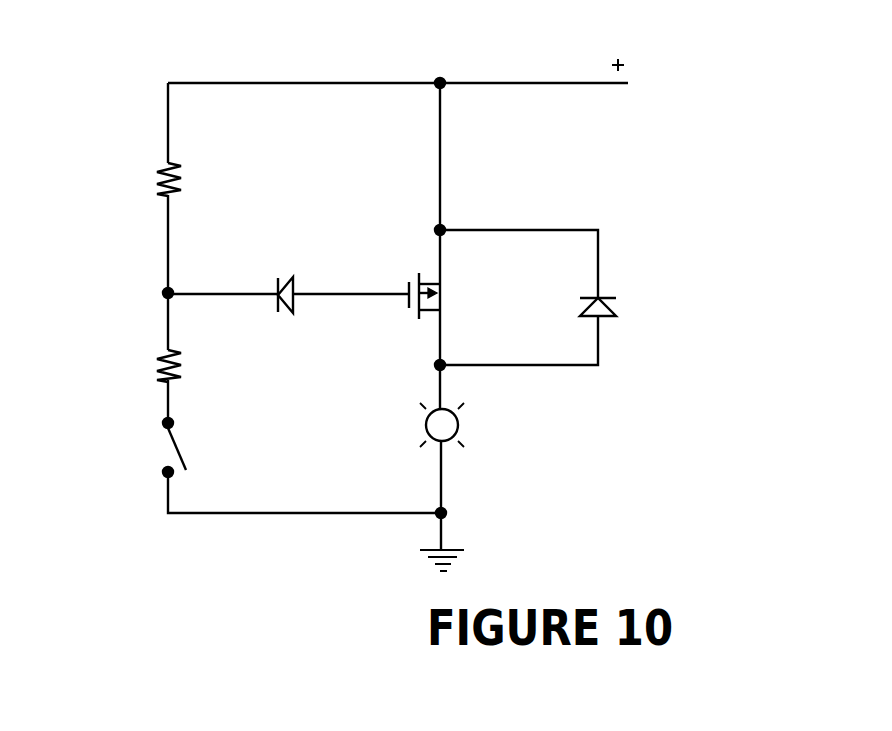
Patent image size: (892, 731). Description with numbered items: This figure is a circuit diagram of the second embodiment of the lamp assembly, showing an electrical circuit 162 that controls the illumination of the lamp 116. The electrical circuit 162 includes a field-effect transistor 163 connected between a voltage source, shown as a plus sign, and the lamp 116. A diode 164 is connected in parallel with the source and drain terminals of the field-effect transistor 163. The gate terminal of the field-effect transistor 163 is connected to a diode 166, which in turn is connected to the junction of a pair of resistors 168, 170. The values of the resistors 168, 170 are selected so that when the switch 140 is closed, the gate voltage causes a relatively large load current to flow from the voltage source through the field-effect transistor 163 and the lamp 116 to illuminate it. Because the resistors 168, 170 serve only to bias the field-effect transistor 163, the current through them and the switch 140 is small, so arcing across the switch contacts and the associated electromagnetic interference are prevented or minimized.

The electrical circuit 162 is at (228, 82).
The resistor 168 is at (170, 168).
The resistor 170 is at (160, 352).
The switch 140 is at (185, 443).
The diode 166 is at (295, 302).
The field-effect transistor 163 is at (417, 282).
The diode 164 is at (600, 298).
The lamp 116 is at (465, 423).